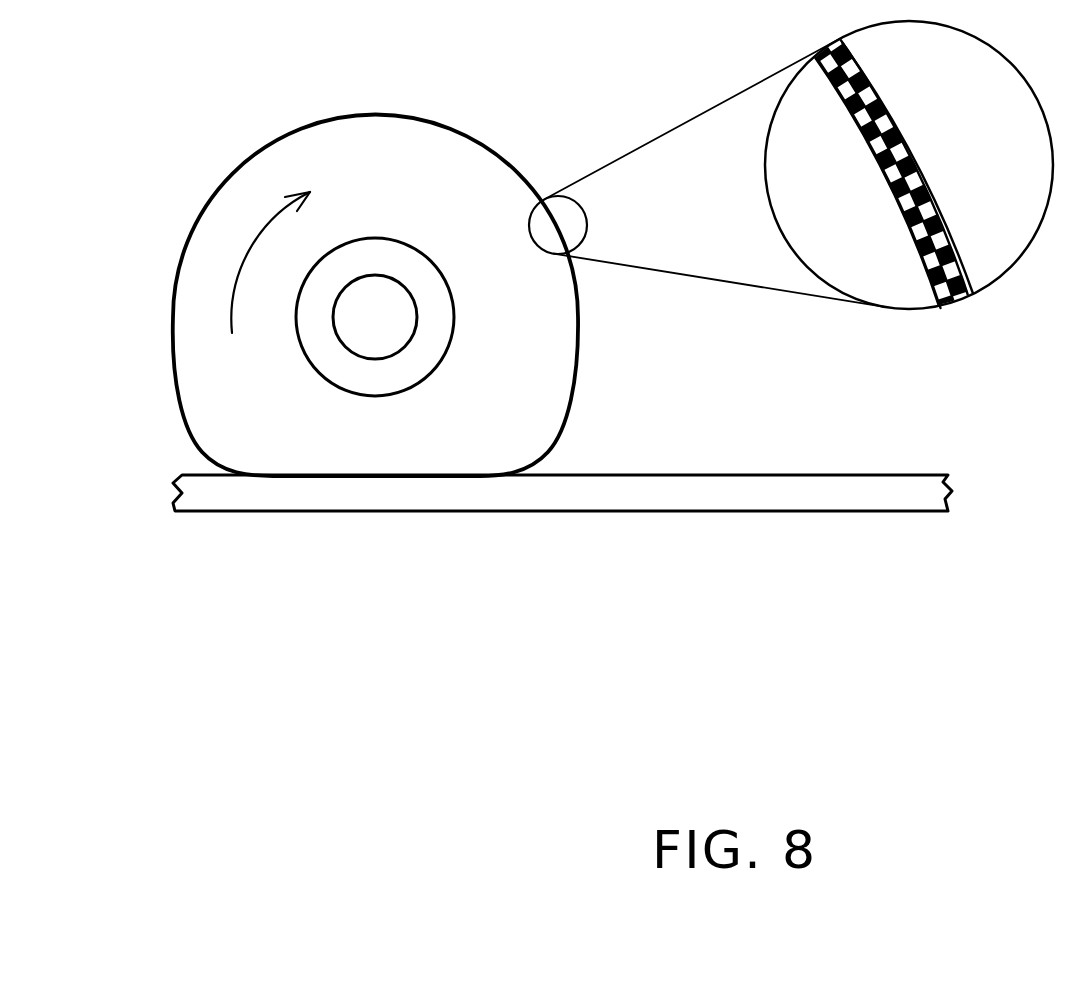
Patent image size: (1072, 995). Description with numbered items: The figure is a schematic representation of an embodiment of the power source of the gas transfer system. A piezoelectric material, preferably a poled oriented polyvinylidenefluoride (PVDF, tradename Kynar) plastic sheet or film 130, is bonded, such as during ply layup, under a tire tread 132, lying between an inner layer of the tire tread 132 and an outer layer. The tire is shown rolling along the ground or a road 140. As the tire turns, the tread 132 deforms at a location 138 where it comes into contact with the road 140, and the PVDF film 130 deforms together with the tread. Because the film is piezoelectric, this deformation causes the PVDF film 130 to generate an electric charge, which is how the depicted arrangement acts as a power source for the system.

The PVDF film 130 is at (887, 191).
The tire tread 132 is at (485, 142).
The location 138 is at (332, 480).
The road 140 is at (538, 497).